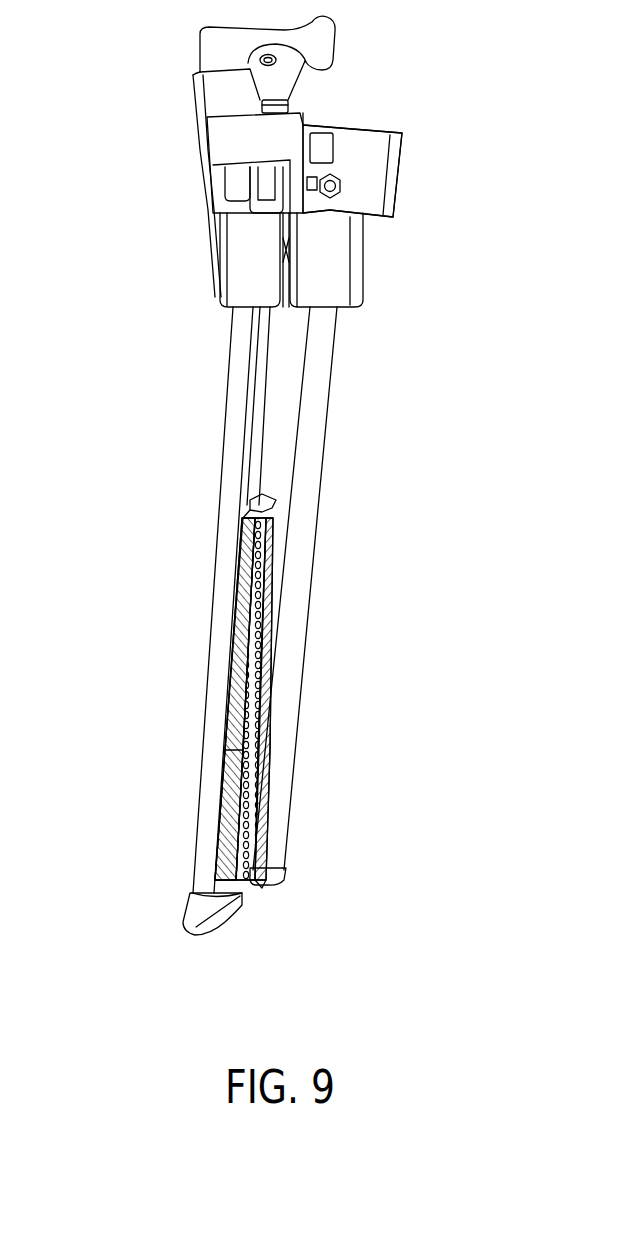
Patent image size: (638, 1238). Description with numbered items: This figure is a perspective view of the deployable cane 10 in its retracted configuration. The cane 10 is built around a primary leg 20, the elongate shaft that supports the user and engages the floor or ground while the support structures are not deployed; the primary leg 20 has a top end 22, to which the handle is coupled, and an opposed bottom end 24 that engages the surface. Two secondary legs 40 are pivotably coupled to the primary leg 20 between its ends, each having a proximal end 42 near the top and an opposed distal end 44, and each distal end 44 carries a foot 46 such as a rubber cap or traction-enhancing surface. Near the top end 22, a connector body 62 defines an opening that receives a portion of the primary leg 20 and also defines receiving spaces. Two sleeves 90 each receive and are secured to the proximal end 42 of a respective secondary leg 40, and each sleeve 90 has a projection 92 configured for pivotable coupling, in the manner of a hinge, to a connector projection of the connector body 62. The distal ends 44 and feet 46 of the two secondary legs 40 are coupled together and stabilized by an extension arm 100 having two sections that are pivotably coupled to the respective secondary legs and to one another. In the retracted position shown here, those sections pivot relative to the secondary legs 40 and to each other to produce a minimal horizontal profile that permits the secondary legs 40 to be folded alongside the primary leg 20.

The cane 10 is at (110, 82).
The primary leg 20 is at (272, 400).
The top end 22 is at (290, 108).
The bottom end 24 is at (290, 897).
The secondary legs 40 is at (238, 400).
The proximal end 42 is at (240, 318).
The distal end 44 is at (280, 850).
The foot 46 is at (205, 918).
The connector body 62 is at (375, 166).
The sleeves 90 is at (253, 265).
The sleeve projection 92 is at (270, 200).
The extension arm 100 is at (285, 520).